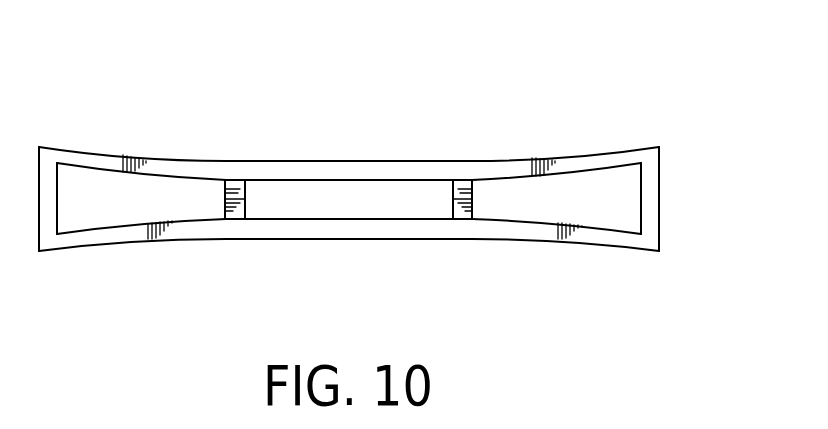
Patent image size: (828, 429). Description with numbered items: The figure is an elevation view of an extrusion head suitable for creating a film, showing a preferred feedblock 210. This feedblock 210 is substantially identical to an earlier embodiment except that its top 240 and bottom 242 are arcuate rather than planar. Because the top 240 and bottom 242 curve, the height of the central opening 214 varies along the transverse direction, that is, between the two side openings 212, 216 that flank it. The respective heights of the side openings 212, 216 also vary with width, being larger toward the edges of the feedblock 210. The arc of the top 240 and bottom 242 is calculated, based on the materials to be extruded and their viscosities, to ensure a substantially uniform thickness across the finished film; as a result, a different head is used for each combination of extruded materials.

The feedblock 210 is at (607, 118).
The opening 212 is at (123, 212).
The central opening 214 is at (337, 202).
The opening 216 is at (523, 200).
The top 240 is at (303, 168).
The bottom 242 is at (597, 236).